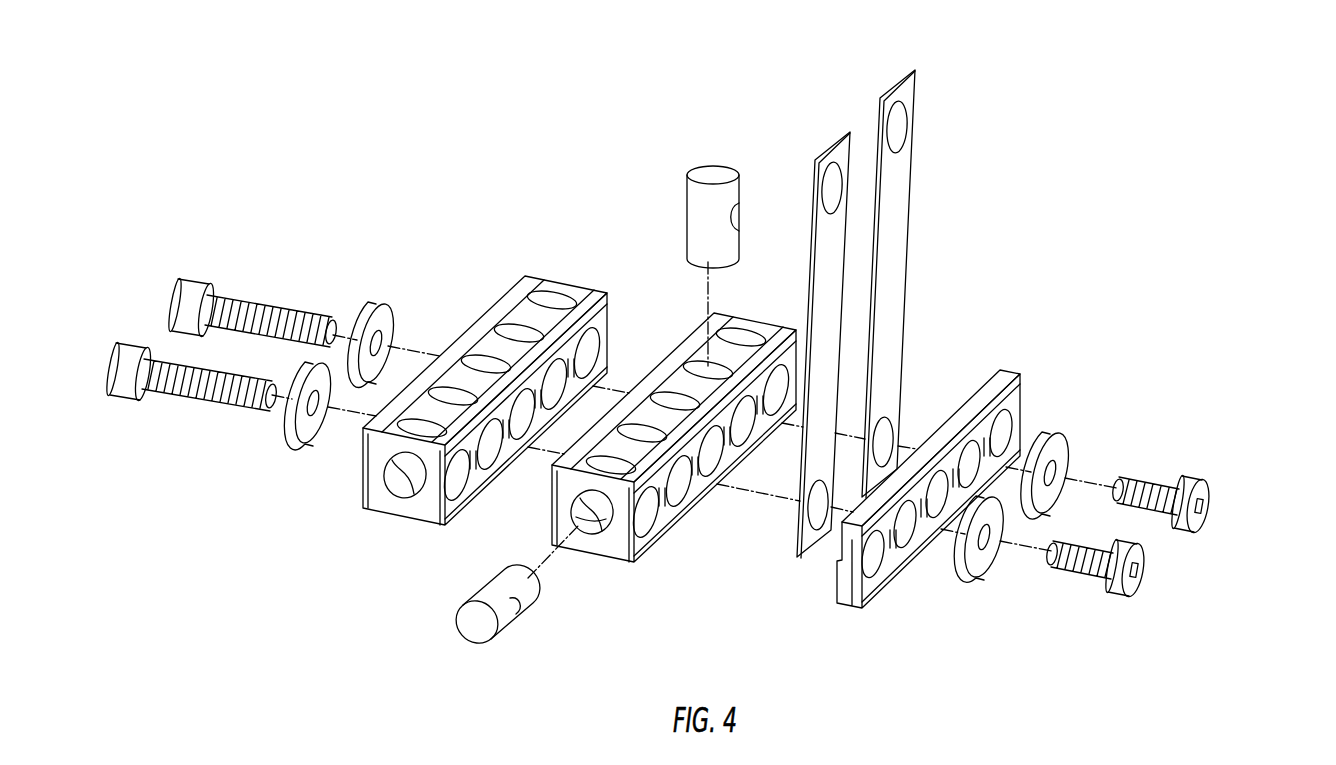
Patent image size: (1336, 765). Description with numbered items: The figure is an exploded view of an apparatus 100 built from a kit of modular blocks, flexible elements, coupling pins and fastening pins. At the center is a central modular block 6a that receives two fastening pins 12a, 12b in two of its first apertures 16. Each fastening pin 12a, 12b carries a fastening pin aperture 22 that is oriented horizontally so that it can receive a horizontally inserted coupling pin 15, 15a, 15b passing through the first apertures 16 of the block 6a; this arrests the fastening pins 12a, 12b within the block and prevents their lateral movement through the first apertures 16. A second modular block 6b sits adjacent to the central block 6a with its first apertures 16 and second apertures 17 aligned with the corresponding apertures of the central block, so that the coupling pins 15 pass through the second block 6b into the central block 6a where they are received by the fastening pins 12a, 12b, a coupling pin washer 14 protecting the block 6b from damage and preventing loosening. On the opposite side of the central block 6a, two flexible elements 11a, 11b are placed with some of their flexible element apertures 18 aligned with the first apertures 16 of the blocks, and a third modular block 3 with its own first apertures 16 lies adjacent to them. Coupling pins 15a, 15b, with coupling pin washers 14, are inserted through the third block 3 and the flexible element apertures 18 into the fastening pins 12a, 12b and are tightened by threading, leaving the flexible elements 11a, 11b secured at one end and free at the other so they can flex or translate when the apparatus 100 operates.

The apparatus 100 is at (998, 90).
The third modular block 3 is at (1017, 370).
The central modular block 6a is at (653, 545).
The second modular block 6b is at (393, 515).
The flexible element 11a is at (917, 108).
The flexible element 11b is at (835, 148).
The fastening pin 12a is at (719, 167).
The fastening pin 12b is at (507, 632).
The coupling pin washer 14 is at (305, 447).
The coupling pin 15 is at (172, 290).
The coupling pin 15a is at (1202, 479).
The coupling pin 15b is at (1137, 591).
The first aperture 16 is at (551, 297).
The second aperture 17 is at (585, 348).
The flexible element aperture 18 is at (830, 192).
The fastening pin aperture 22 is at (739, 217).